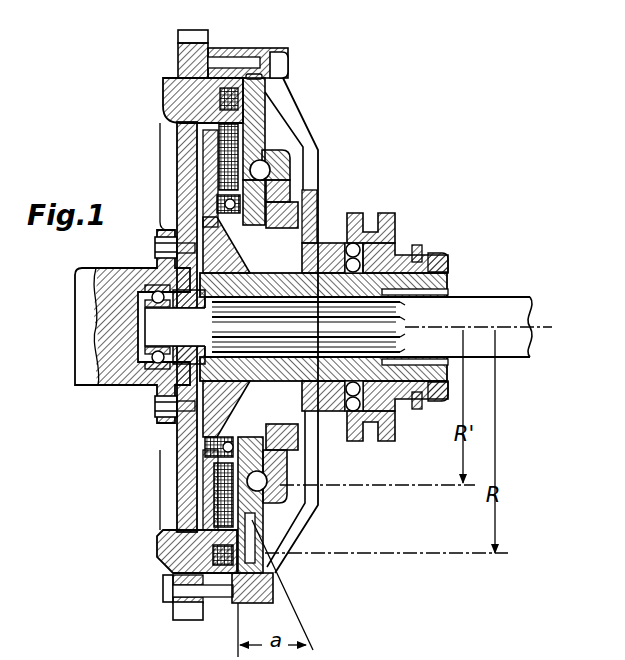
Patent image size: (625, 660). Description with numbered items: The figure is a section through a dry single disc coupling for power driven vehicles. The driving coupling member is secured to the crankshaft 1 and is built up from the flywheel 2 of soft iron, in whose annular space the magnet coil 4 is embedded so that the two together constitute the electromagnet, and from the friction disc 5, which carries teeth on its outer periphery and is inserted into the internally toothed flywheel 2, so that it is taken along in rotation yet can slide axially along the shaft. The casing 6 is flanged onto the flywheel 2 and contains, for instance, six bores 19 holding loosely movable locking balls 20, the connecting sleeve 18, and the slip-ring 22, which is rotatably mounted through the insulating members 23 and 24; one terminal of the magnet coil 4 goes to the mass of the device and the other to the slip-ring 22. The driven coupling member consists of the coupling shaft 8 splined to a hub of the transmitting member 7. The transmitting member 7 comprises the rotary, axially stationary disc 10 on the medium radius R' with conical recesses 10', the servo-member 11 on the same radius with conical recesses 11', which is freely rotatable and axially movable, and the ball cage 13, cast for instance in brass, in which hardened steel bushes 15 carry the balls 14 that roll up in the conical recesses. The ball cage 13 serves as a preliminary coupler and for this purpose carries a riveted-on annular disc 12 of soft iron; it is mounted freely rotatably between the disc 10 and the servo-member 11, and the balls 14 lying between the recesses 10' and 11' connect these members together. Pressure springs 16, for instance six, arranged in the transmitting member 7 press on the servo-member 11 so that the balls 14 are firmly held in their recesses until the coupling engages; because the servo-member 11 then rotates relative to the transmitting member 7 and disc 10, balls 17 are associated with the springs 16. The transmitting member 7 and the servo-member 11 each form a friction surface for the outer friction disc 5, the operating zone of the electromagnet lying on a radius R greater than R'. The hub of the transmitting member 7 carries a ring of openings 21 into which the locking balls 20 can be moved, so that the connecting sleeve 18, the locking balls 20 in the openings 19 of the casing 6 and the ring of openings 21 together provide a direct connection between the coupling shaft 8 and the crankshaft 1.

The crankshaft 1 is at (82, 293).
The flywheel 2 is at (176, 108).
The magnet coil 4 is at (212, 99).
The friction disc 5 is at (217, 505).
The casing 6 is at (274, 591).
The transmitting member 7 is at (228, 403).
The coupling shaft 8 is at (522, 352).
The disc 10 is at (279, 234).
The conical recesses 10' is at (311, 188).
The servo-member 11 is at (247, 218).
The conical recesses 11' is at (181, 168).
The annular disc 12 is at (255, 74).
The ball cage 13 is at (270, 96).
The balls 14 is at (280, 174).
The hardened steel bushes 15 is at (288, 468).
The pressure springs 16 is at (212, 455).
The balls 17 is at (206, 436).
The connecting sleeve 18 is at (396, 232).
The bores 19 is at (340, 253).
The locking balls 20 is at (351, 412).
The ring of openings 21 is at (448, 287).
The slip-ring 22 is at (416, 410).
The insulating member 23 is at (400, 441).
The insulating member 24 is at (436, 402).